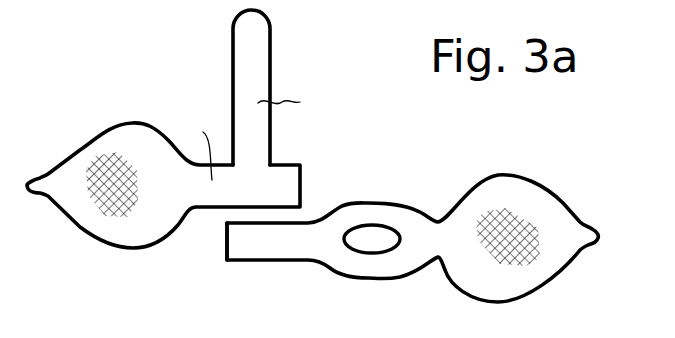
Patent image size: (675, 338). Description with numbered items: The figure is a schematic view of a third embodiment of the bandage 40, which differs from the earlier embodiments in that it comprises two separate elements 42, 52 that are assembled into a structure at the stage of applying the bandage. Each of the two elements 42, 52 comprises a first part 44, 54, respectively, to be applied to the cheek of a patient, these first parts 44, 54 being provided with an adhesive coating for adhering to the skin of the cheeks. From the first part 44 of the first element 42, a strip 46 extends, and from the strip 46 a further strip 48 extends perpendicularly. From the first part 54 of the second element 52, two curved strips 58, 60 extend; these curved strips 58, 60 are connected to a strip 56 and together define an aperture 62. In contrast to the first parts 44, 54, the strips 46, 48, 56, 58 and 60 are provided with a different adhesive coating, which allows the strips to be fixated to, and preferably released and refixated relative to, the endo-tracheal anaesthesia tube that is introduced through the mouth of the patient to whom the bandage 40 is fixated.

The bandage 40 is at (288, 66).
The first element 42 is at (130, 111).
The first part 44 is at (115, 228).
The strip 46 is at (198, 138).
The further strip 48 is at (298, 102).
The second element 52 is at (533, 162).
The first part 54 is at (562, 225).
The strip 56 is at (268, 247).
The curved strip 58 is at (350, 265).
The curved strip 60 is at (378, 210).
The aperture 62 is at (387, 242).